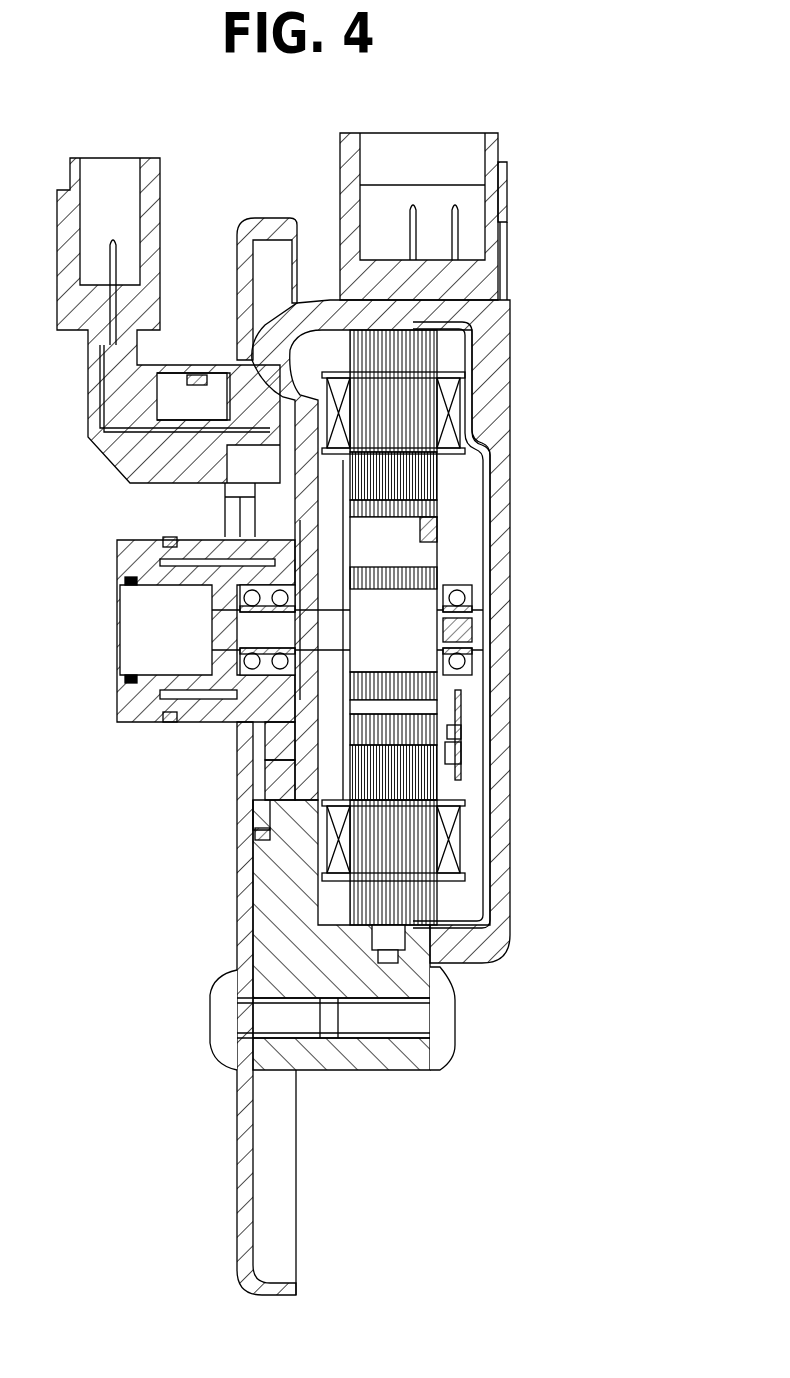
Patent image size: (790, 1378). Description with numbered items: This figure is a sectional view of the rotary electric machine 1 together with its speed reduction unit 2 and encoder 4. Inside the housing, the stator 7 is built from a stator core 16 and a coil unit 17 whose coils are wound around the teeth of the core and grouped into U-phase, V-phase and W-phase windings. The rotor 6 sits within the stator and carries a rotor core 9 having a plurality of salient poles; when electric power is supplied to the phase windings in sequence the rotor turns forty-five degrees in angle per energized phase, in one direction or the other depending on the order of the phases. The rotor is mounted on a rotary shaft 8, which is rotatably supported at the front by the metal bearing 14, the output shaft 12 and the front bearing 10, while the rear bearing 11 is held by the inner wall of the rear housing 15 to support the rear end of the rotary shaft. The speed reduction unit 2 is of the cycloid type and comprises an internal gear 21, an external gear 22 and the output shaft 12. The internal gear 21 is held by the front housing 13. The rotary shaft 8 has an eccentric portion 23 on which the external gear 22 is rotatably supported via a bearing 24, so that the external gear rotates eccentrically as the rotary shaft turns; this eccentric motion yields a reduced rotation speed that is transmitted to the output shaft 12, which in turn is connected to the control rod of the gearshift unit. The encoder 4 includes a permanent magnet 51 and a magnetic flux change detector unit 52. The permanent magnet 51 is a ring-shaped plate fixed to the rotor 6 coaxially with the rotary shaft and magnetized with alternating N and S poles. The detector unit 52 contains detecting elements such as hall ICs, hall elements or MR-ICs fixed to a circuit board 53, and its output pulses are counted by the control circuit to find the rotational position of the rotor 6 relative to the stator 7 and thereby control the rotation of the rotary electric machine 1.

The rotary electric machine 1 is at (497, 627).
The speed reduction unit 2 is at (206, 714).
The encoder 4 is at (537, 738).
The rotor 6 is at (487, 626).
The stator 7 is at (473, 627).
The rotary shaft 8 is at (415, 600).
The rotor core 9 is at (425, 492).
The front bearing 10 is at (237, 550).
The rear bearing 11 is at (485, 660).
The output shaft 12 is at (245, 722).
The front housing 13 is at (270, 930).
The metal bearing 14 is at (165, 540).
The rear housing 15 is at (500, 602).
The stator core 16 is at (425, 400).
The coil unit 17 is at (452, 412).
The internal gear 21 is at (215, 859).
The external gear 22 is at (273, 810).
The eccentric portion 23 is at (295, 745).
The bearing 24 is at (287, 783).
The permanent magnet 51 is at (447, 722).
The magnetic flux change detector unit 52 is at (462, 733).
The circuit board 53 is at (463, 763).